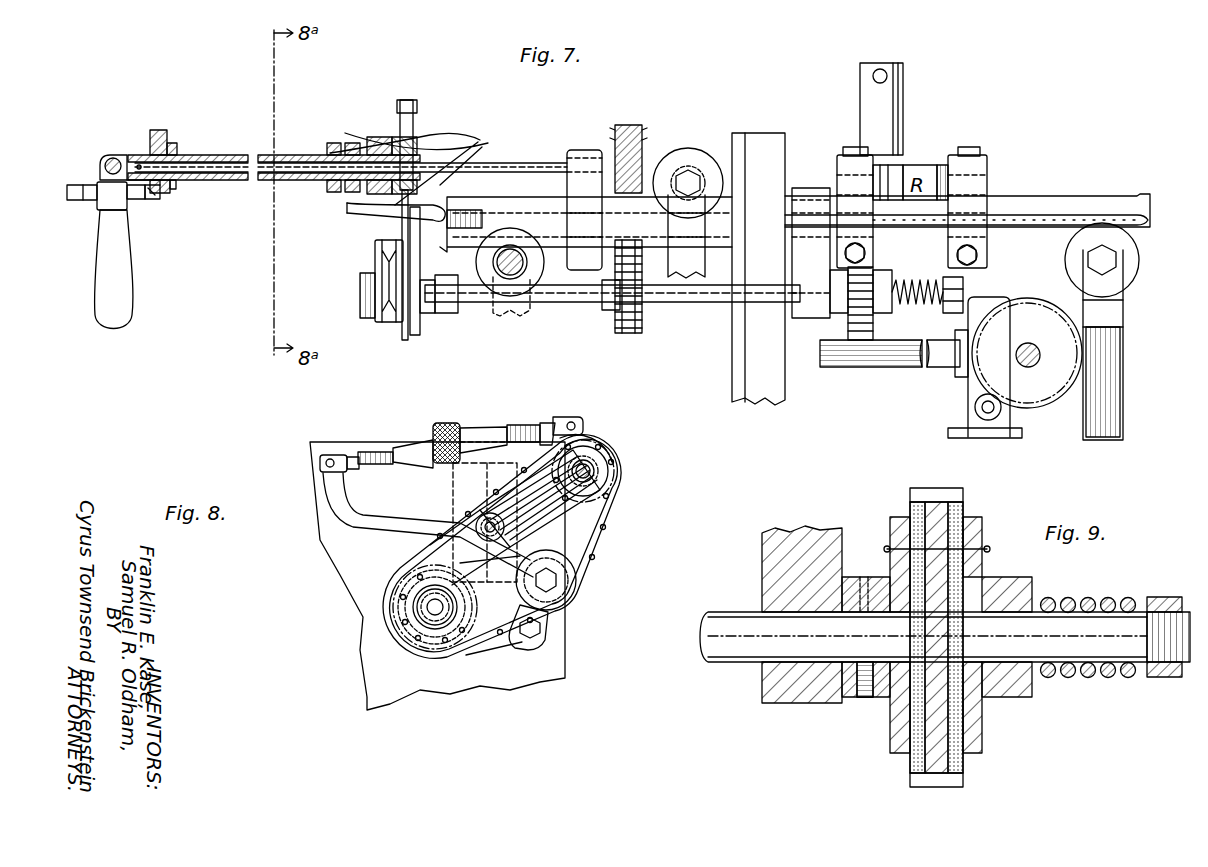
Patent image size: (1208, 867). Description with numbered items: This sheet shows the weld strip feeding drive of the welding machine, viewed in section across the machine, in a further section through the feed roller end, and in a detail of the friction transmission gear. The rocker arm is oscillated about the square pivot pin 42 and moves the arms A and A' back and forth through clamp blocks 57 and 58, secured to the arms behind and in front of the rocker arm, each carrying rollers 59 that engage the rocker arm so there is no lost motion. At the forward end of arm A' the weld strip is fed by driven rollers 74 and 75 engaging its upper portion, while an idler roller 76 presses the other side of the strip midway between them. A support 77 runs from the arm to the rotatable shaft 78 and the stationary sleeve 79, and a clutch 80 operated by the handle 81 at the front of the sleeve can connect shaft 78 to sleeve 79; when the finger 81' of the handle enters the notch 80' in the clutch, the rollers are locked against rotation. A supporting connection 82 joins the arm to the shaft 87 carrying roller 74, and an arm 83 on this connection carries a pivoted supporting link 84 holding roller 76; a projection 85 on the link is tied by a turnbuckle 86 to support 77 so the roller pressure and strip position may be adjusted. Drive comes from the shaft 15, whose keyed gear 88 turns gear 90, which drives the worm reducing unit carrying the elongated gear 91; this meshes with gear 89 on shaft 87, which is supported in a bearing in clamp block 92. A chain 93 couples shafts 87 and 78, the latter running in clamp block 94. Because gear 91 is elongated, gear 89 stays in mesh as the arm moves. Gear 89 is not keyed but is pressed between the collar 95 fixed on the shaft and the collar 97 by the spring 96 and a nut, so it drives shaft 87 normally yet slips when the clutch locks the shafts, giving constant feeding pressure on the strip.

In FIG. 7, the shaft 15 is at (1035, 362).
In FIG. 7, the pivot pin 42 is at (903, 90).
In FIG. 7, the clamp block 57 is at (995, 200).
In FIG. 7, the clamp block 58 is at (837, 168).
In FIG. 7, the rollers 59 is at (905, 175).
In FIG. 7, the driven roller 74 is at (360, 310).
In FIG. 8, the driven roller 74 is at (418, 607).
In FIG. 7, the driven roller 75 is at (378, 137).
In FIG. 8, the driven roller 75 is at (605, 481).
In FIG. 7, the idler roller 76 is at (372, 255).
In FIG. 8, the idler roller 76 is at (578, 582).
In FIG. 7, the support 77 is at (340, 143).
In FIG. 8, the support 77 is at (570, 508).
In FIG. 7, the rotatable shaft 78 is at (520, 150).
In FIG. 8, the rotatable shaft 78 is at (598, 466).
In FIG. 7, the stationary sleeve 79 is at (285, 155).
In FIG. 7, the clutch 80 is at (188, 138).
In FIG. 7, the notch 80' is at (192, 179).
In FIG. 7, the handle 81 is at (132, 242).
In FIG. 7, the finger 81' is at (118, 206).
In FIG. 7, the supporting connection 82 is at (432, 315).
In FIG. 8, the supporting connection 82 is at (428, 560).
In FIG. 7, the arm 83 is at (415, 335).
In FIG. 8, the arm 83 is at (505, 625).
In FIG. 7, the supporting link 84 is at (405, 340).
In FIG. 8, the supporting link 84 is at (552, 628).
In FIG. 8, the projection 85 is at (410, 520).
In FIG. 8, the turnbuckle 86 is at (480, 425).
In FIG. 7, the shaft 87 is at (565, 305).
In FIG. 8, the shaft 87 is at (433, 612).
In FIG. 9, the shaft 87 is at (1140, 622).
In FIG. 7, the gear 88 is at (1040, 405).
In FIG. 7, the gear 89 is at (866, 318).
In FIG. 9, the gear 89 is at (940, 488).
In FIG. 7, the gear 90 is at (995, 418).
In FIG. 7, the elongated gear 91 is at (870, 367).
In FIG. 7, the clamp block 92 is at (805, 188).
In FIG. 9, the clamp block 92 is at (785, 703).
In FIG. 7, the chain 93 is at (640, 125).
In FIG. 8, the chain 93 is at (582, 562).
In FIG. 7, the clamp block 94 is at (585, 150).
In FIG. 7, the collar 95 is at (838, 313).
In FIG. 9, the collar 95 is at (870, 577).
In FIG. 7, the spring 96 is at (955, 313).
In FIG. 9, the spring 96 is at (1090, 597).
In FIG. 7, the collar 97 is at (895, 278).
In FIG. 9, the collar 97 is at (1015, 580).